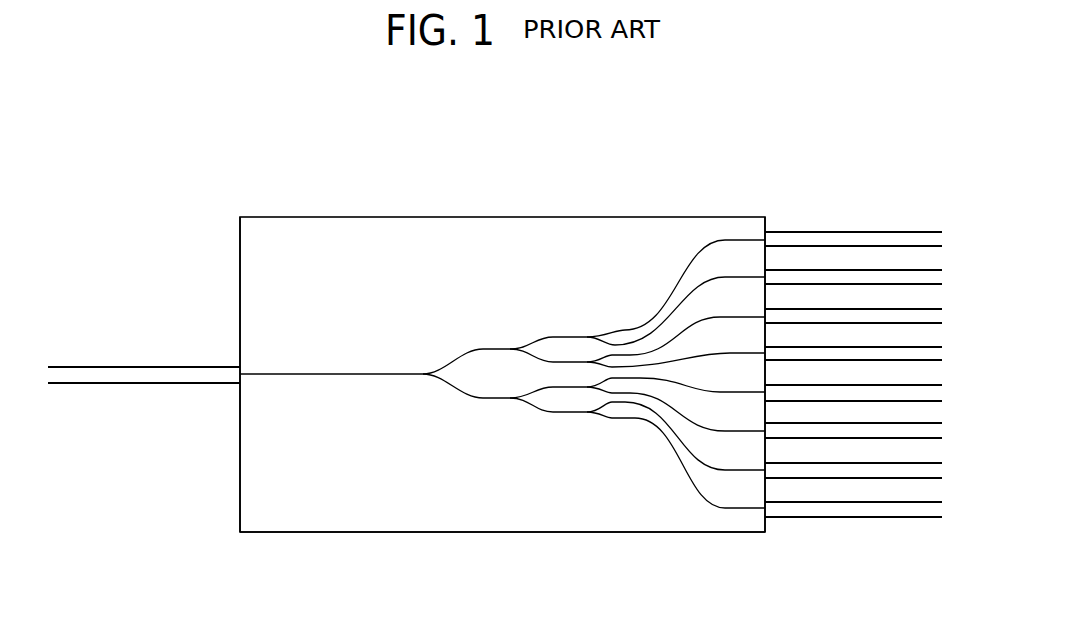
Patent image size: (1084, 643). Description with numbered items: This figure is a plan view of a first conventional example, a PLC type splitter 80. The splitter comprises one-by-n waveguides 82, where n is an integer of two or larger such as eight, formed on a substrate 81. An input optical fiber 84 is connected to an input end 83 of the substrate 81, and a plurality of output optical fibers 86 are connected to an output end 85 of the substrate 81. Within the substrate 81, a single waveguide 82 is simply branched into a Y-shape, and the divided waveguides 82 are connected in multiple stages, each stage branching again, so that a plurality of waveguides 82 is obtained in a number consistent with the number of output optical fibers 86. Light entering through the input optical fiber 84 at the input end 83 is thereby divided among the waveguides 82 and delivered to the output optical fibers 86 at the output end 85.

The PLC type splitter 80 is at (594, 213).
The substrate 81 is at (495, 519).
The waveguides 82 is at (482, 347).
The input end 83 is at (240, 458).
The input optical fiber 84 is at (117, 384).
The output end 85 is at (767, 524).
The output optical fibers 86 is at (861, 518).